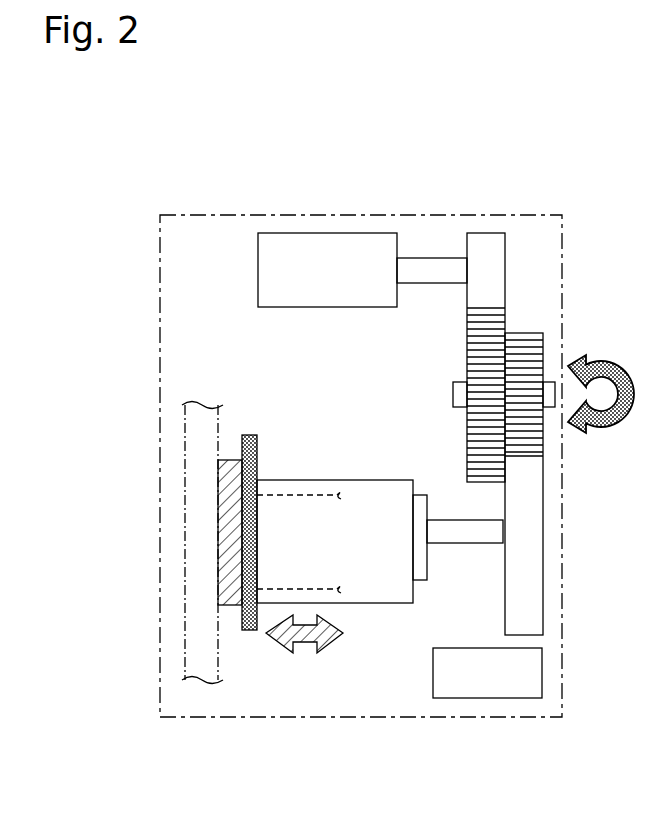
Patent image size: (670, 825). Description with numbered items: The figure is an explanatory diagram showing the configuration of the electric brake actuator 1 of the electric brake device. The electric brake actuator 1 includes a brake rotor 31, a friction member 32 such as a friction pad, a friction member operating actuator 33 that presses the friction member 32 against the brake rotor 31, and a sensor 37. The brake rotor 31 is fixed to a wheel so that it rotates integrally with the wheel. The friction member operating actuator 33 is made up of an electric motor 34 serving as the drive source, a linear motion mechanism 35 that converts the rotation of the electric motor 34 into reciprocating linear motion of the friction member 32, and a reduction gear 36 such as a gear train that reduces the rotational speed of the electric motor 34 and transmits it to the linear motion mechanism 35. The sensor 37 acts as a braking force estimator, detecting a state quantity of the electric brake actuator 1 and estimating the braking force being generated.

The electric brake actuator 1 is at (190, 285).
The brake rotor 31 is at (197, 430).
The friction member 32 is at (218, 602).
The friction member operating actuator 33 is at (240, 157).
The electric motor 34 is at (326, 242).
The linear motion mechanism 35 is at (313, 488).
The reduction gear 36 is at (526, 306).
The sensor 37 is at (483, 698).